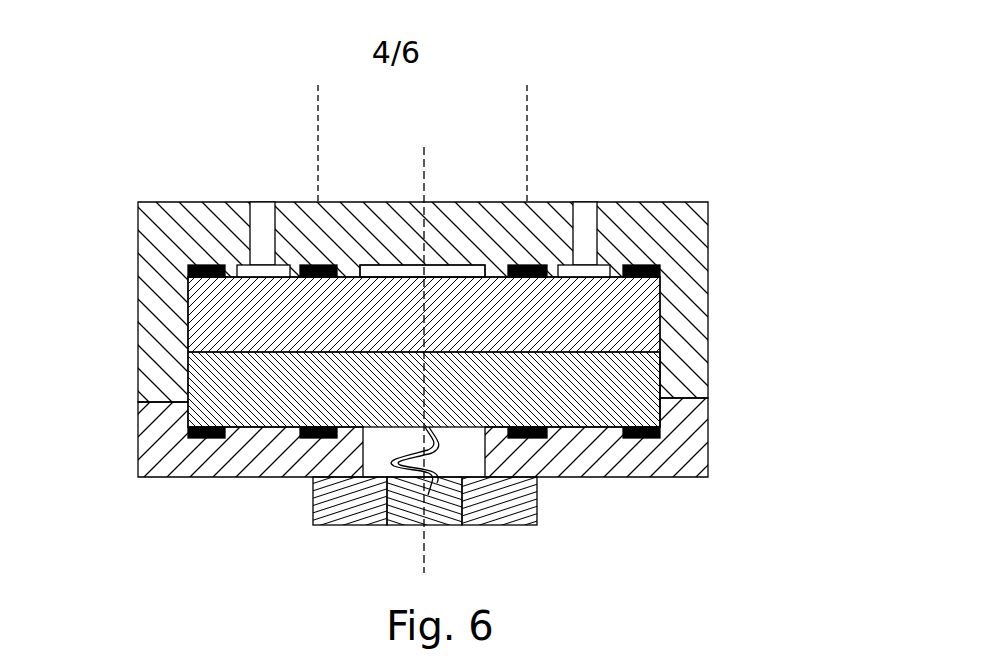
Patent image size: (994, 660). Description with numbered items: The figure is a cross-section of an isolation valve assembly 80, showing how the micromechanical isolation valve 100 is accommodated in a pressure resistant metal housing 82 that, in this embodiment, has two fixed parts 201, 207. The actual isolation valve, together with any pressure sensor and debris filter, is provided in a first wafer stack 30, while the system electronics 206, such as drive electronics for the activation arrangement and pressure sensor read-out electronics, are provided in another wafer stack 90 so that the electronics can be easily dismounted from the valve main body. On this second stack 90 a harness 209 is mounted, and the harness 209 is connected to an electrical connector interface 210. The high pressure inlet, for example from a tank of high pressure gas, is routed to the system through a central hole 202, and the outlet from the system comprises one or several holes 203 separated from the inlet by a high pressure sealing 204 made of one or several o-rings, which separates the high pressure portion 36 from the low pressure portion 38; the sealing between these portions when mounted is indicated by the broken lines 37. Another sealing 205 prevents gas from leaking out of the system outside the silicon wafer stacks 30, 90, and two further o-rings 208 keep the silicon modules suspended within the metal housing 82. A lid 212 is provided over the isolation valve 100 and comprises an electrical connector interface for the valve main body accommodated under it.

The first wafer stack 30 is at (662, 325).
The high pressure portion 36 is at (453, 160).
The broken lines indicating sealing 37 is at (318, 85).
The low pressure portion 38 is at (183, 122).
The isolation valve assembly 80 is at (727, 160).
The metal housing 82 is at (690, 243).
The second wafer stack 90 is at (698, 441).
The isolation valve 100 is at (660, 290).
The fixed part of housing 201 is at (668, 202).
The central hole 202 is at (418, 202).
The outlet holes 203 is at (580, 202).
The high pressure sealing 204 is at (307, 262).
The sealing 205 is at (190, 262).
The system electronics 206 is at (658, 383).
The fixed part of housing 207 is at (597, 462).
The o-rings 208 is at (212, 438).
The harness 209 is at (396, 462).
The electrical connector interface 210 is at (447, 512).
The lid 212 is at (522, 510).